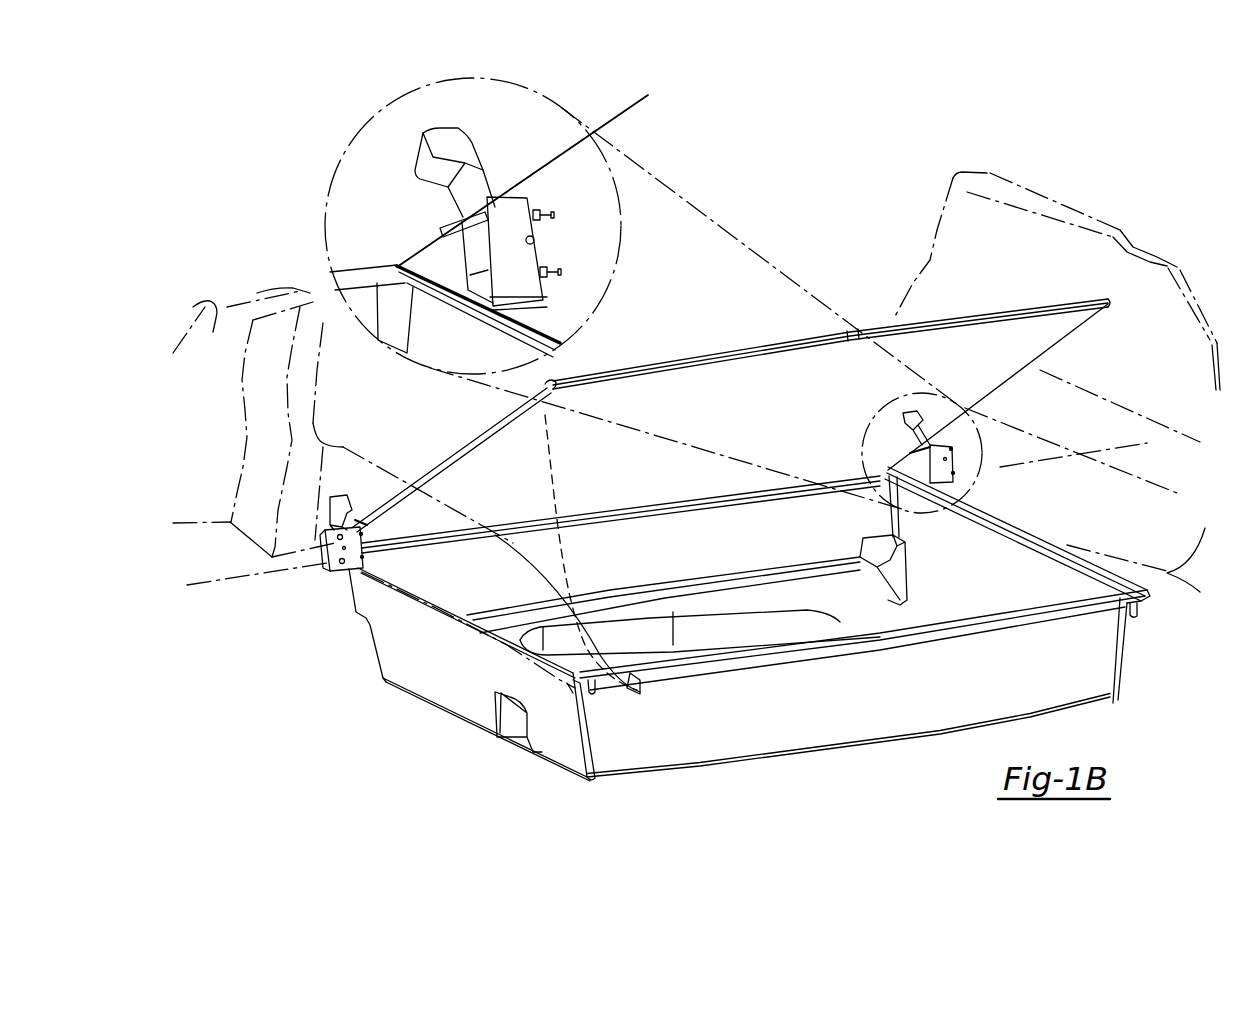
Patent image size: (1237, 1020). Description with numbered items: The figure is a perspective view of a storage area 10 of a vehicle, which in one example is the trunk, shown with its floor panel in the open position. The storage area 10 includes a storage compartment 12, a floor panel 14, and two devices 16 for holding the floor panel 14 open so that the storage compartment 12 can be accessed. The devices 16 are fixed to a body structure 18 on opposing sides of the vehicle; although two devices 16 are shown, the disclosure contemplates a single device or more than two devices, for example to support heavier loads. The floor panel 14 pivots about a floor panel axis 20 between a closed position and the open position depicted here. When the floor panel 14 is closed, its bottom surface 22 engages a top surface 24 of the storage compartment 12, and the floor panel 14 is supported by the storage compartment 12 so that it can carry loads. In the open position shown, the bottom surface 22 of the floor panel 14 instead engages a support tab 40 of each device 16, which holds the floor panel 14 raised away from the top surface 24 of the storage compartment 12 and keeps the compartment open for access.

The storage area 10 is at (1046, 144).
The storage compartment 12 is at (1097, 678).
The floor panel 14 is at (1110, 306).
The device 16 is at (321, 572).
The body structure 18 is at (212, 300).
The floor panel axis 20 is at (193, 587).
The bottom surface 22 is at (525, 124).
The top surface 24 is at (990, 613).
The support tab 40 is at (366, 535).